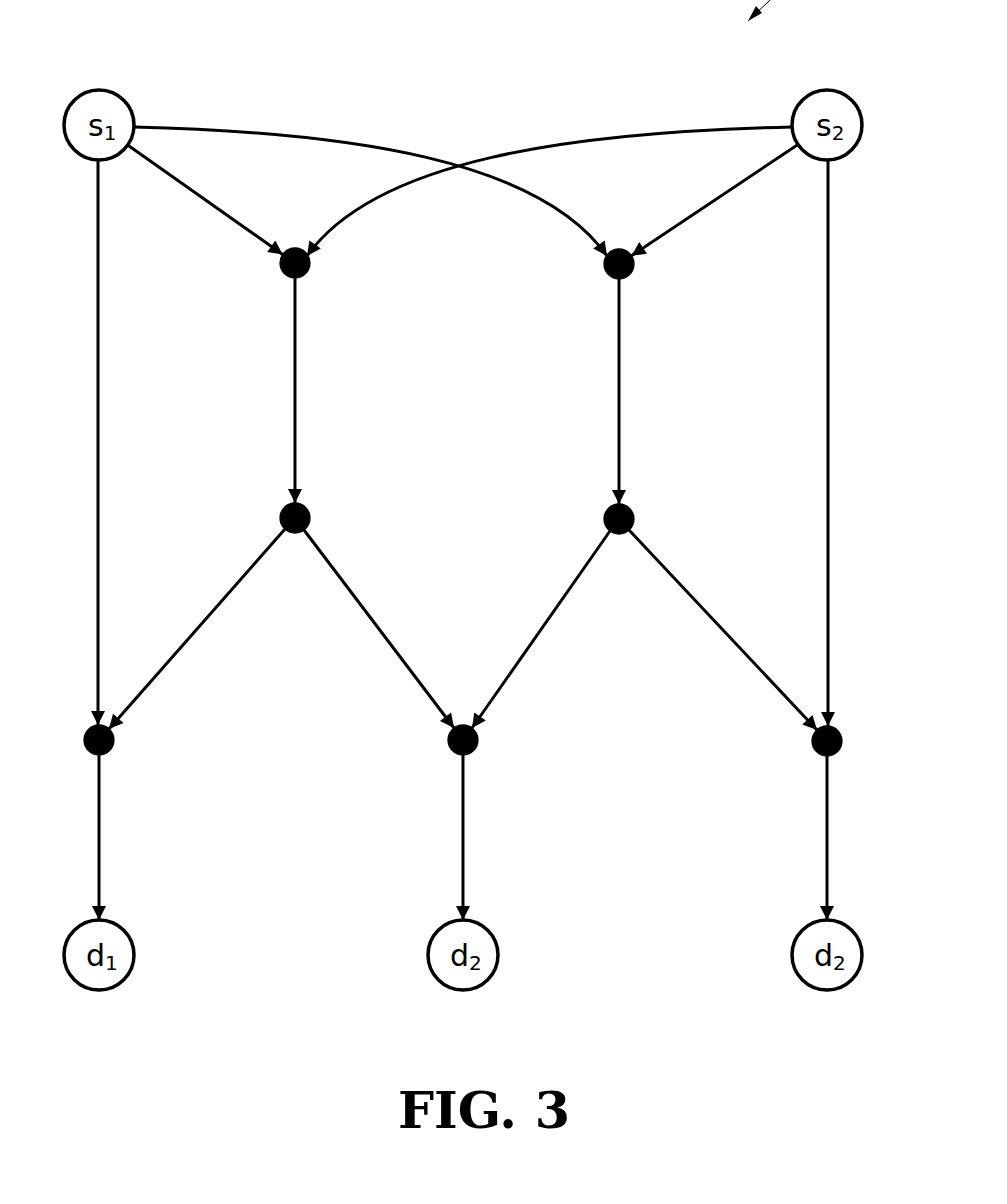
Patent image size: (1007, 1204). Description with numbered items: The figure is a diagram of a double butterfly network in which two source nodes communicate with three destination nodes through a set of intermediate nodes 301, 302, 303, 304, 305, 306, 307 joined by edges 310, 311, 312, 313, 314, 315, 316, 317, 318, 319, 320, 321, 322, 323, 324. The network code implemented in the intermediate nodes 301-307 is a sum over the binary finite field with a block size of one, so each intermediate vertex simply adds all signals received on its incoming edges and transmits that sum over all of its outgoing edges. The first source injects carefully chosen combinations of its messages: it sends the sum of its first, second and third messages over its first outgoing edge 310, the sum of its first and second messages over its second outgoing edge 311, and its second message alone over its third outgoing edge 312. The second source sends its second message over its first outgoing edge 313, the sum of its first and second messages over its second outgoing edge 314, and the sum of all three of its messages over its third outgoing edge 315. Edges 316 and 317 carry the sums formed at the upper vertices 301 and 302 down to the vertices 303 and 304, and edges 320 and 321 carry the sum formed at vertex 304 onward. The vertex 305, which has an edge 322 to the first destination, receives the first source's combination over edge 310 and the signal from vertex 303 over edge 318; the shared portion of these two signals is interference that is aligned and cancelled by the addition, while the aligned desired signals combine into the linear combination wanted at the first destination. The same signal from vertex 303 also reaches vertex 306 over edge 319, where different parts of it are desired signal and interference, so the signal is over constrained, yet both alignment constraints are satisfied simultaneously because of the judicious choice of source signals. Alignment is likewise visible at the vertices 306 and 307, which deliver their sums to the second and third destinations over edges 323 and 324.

The intermediate node 301 is at (294, 247).
The intermediate node 302 is at (619, 247).
The intermediate node 303 is at (280, 513).
The intermediate node 304 is at (634, 522).
The intermediate node 305 is at (110, 752).
The intermediate node 306 is at (467, 755).
The intermediate node 307 is at (817, 753).
The first outgoing edge 310 is at (98, 280).
The second outgoing edge 311 is at (173, 184).
The third outgoing edge 312 is at (252, 133).
The first outgoing edge 313 is at (643, 128).
The second outgoing edge 314 is at (733, 188).
The third outgoing edge 315 is at (827, 280).
The edge 316 is at (293, 358).
The edge 317 is at (618, 362).
The edge 318 is at (187, 638).
The edge 319 is at (385, 632).
The edge 320 is at (542, 637).
The edge 321 is at (717, 633).
The edge 322 is at (100, 852).
The edge 323 is at (465, 852).
The edge 324 is at (826, 852).